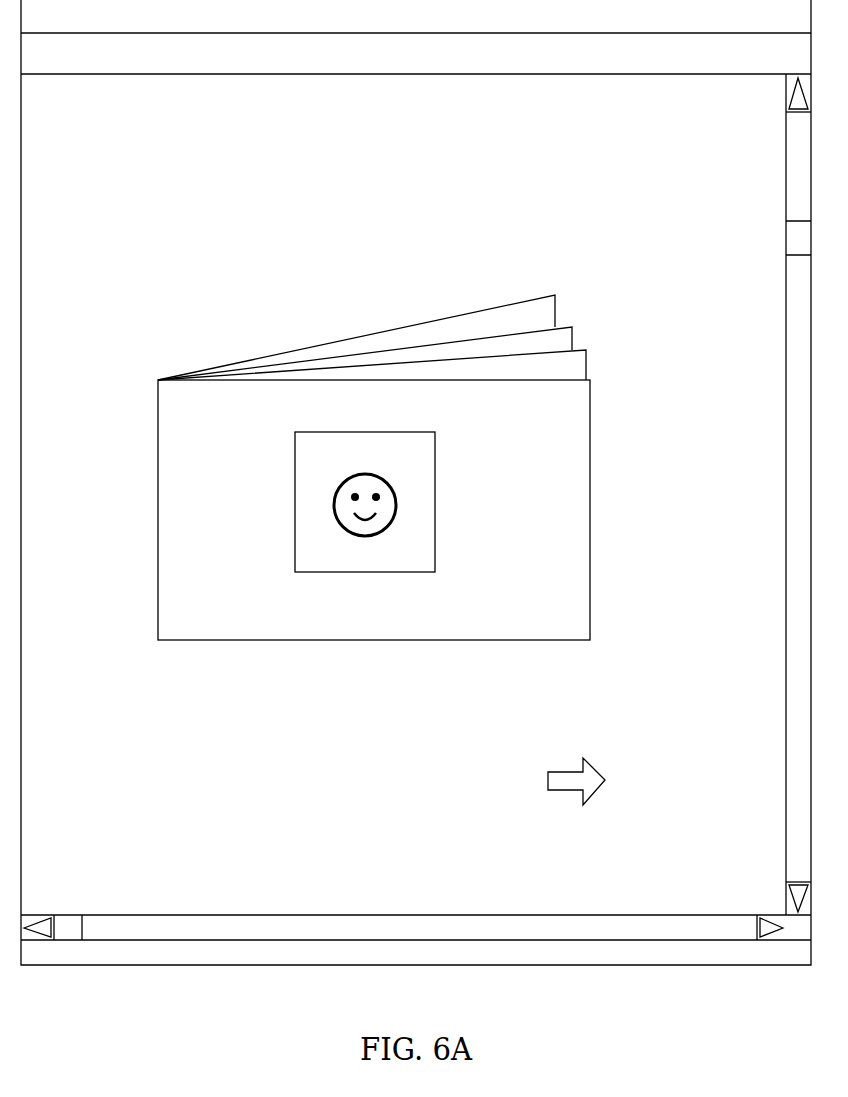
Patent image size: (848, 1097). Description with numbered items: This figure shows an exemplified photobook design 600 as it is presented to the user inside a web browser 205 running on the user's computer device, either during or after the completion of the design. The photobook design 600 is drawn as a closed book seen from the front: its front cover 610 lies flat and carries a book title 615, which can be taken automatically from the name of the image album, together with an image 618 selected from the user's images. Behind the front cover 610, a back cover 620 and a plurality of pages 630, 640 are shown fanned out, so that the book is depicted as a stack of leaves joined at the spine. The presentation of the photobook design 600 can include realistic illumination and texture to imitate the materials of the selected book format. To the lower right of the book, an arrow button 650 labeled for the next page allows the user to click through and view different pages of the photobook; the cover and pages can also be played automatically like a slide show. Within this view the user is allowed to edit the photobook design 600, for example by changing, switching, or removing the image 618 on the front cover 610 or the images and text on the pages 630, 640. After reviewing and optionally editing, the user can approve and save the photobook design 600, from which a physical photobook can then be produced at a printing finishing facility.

The web browser 205 is at (216, 25).
The photobook design 600 is at (428, 432).
The front cover 610 is at (563, 535).
The book title 615 is at (487, 607).
The image 618 is at (355, 460).
The back cover 620 is at (495, 323).
The page 630 is at (560, 373).
The page 640 is at (562, 343).
The arrow button 650 is at (598, 770).